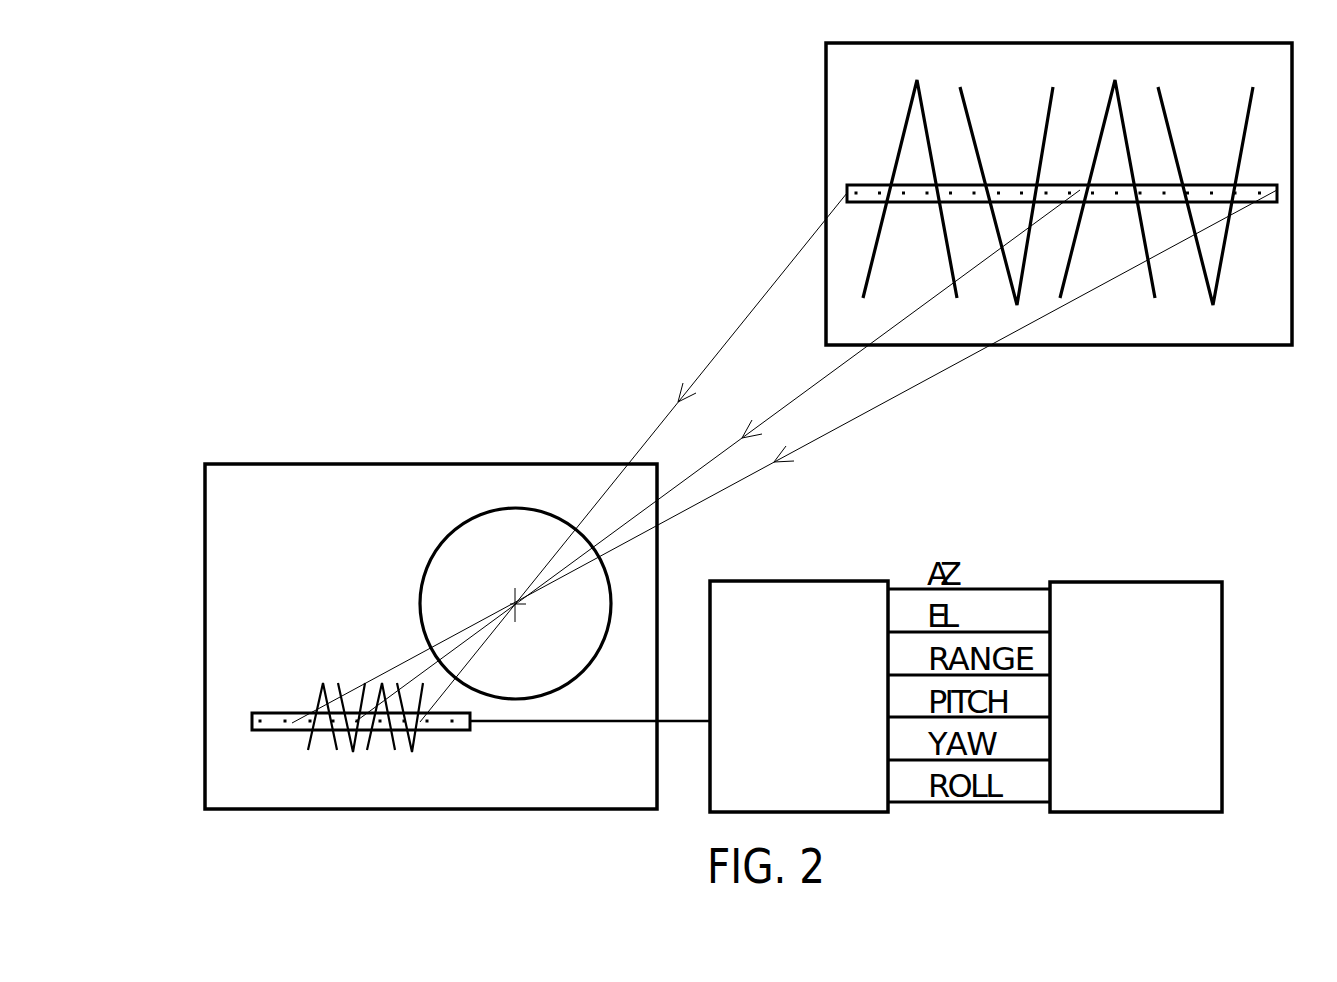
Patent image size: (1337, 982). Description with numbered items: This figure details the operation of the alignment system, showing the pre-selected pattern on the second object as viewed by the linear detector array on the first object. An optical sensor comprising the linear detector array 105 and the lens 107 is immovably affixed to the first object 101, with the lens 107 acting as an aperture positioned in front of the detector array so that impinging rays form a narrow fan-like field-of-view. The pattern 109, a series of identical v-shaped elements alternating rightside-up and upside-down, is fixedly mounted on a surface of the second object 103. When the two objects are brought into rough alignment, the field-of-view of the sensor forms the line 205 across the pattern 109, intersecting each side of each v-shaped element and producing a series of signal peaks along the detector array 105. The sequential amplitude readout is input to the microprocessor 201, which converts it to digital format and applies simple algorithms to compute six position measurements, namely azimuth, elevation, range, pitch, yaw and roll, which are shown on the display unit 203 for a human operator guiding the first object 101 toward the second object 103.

The first object 101 is at (303, 463).
The second object 103 is at (824, 65).
The linear detector array 105 is at (261, 712).
The lens 107 is at (500, 505).
The pattern 109 is at (895, 150).
The microprocessor 201 is at (876, 580).
The display unit 203 is at (1173, 581).
The line 205 is at (824, 192).